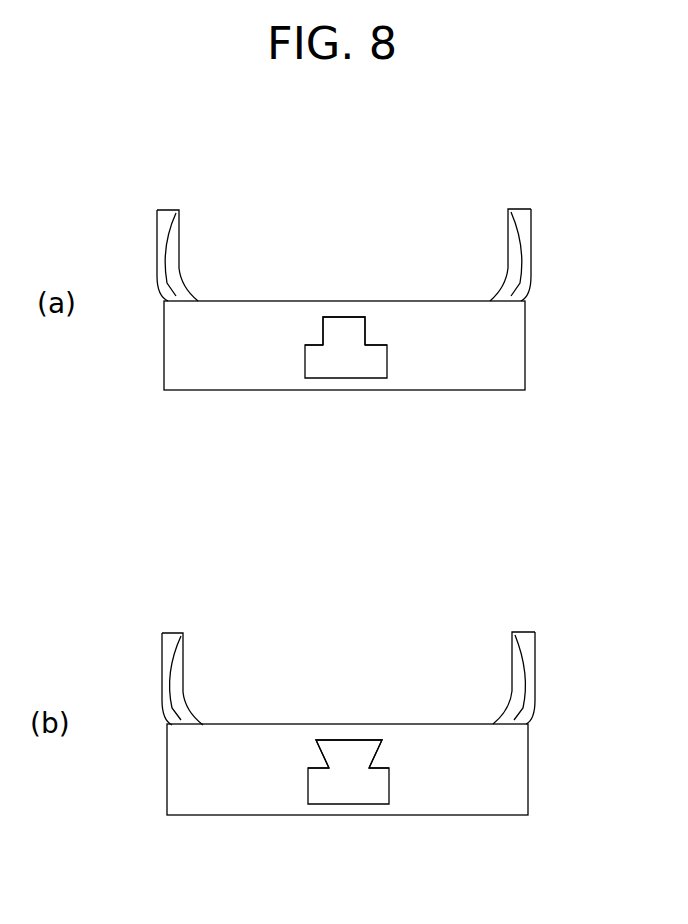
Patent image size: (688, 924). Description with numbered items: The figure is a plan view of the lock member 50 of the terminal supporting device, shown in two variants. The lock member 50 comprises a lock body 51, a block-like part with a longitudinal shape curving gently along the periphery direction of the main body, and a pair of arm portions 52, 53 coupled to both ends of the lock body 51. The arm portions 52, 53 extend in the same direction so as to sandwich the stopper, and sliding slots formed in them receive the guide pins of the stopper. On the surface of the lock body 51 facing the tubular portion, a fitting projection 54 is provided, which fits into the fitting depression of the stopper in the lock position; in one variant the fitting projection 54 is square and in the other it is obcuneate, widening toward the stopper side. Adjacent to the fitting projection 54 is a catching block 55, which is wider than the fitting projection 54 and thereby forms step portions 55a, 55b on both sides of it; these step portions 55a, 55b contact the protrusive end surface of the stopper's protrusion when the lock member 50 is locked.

The lock member 50 is at (316, 162).
The lock body 51 is at (493, 348).
The arm portion 52 is at (165, 210).
The arm portion 53 is at (525, 210).
The fitting projection 54 is at (350, 325).
The catching block 55 is at (347, 363).
The step portion 55a is at (312, 345).
The step portion 55b is at (378, 345).